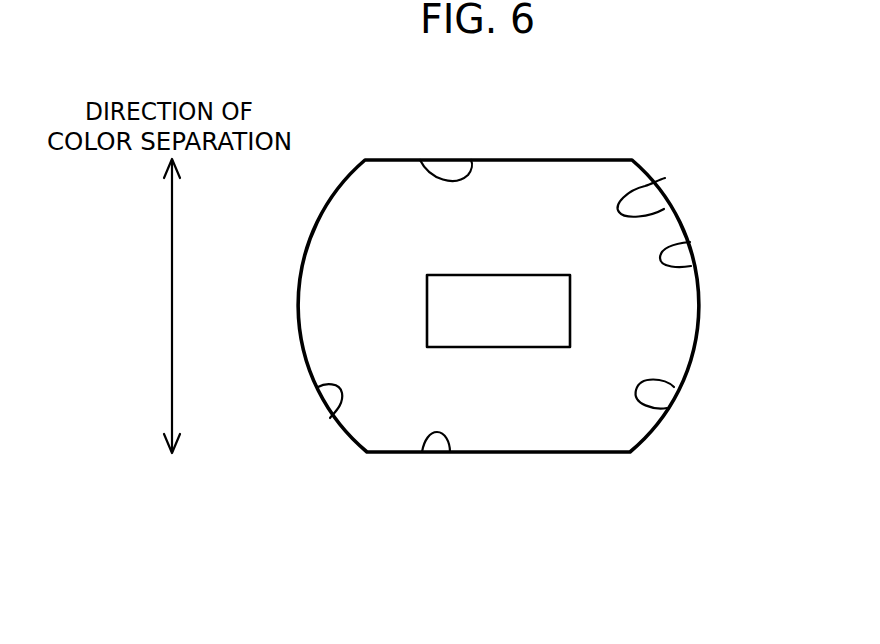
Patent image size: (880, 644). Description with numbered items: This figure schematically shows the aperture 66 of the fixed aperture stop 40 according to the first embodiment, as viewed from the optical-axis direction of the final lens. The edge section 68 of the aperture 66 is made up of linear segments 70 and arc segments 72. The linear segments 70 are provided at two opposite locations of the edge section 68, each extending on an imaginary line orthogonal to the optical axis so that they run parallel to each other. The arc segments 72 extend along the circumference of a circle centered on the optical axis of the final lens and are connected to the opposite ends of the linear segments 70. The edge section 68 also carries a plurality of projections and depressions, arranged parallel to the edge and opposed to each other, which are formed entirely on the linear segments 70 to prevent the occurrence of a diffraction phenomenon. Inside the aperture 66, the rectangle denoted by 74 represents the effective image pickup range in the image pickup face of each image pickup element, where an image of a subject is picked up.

The fixed aperture stop 40 is at (601, 128).
The aperture 66 is at (665, 178).
The edge section 68 is at (690, 242).
The linear segments 70 is at (420, 160).
The arc segments 72 is at (340, 410).
The effective image pickup range 74 is at (571, 313).